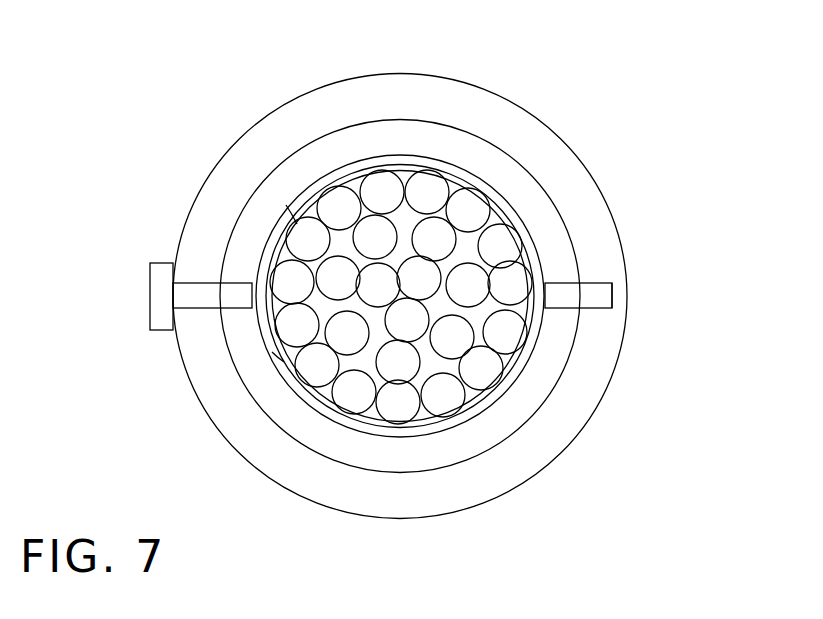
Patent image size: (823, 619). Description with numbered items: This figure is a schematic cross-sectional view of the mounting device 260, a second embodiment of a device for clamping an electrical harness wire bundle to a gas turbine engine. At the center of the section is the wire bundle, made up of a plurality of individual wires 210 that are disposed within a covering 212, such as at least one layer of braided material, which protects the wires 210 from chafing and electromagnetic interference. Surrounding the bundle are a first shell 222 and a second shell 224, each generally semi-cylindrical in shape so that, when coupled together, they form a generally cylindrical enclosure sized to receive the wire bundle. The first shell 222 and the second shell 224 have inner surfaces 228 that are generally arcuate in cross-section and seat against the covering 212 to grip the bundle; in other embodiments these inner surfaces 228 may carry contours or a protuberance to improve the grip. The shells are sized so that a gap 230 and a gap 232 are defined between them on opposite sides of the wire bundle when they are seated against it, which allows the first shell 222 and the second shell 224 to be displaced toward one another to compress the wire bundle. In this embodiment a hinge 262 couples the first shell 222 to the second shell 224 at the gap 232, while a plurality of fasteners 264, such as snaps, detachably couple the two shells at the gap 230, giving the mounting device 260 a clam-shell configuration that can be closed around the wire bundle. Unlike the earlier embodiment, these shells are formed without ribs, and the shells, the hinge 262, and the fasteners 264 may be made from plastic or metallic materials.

The wires 210 is at (440, 397).
The covering 212 is at (529, 347).
The first shell 222 is at (302, 83).
The second shell 224 is at (335, 518).
The inner surfaces 228 is at (295, 223).
The gap 230 is at (205, 302).
The gap 232 is at (600, 310).
The mounting device 260 is at (598, 115).
The hinge 262 is at (623, 297).
The fasteners 264 is at (163, 290).